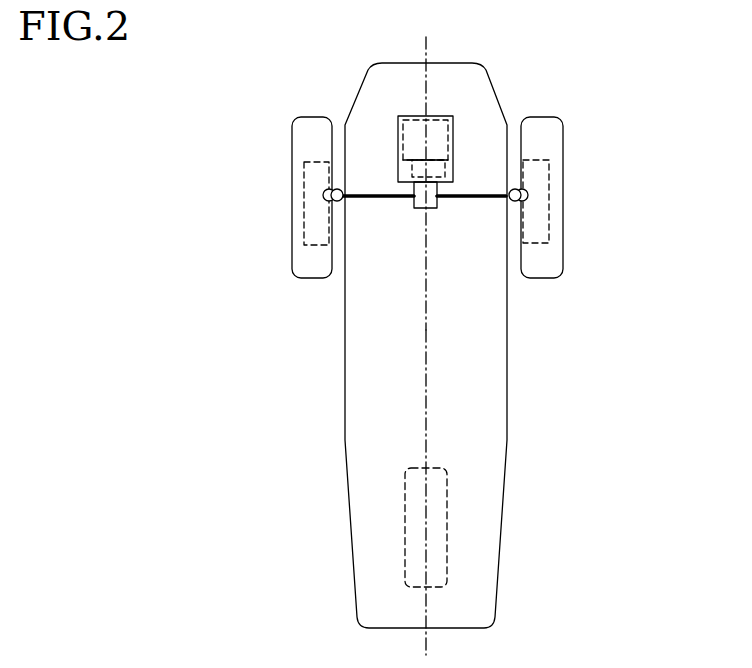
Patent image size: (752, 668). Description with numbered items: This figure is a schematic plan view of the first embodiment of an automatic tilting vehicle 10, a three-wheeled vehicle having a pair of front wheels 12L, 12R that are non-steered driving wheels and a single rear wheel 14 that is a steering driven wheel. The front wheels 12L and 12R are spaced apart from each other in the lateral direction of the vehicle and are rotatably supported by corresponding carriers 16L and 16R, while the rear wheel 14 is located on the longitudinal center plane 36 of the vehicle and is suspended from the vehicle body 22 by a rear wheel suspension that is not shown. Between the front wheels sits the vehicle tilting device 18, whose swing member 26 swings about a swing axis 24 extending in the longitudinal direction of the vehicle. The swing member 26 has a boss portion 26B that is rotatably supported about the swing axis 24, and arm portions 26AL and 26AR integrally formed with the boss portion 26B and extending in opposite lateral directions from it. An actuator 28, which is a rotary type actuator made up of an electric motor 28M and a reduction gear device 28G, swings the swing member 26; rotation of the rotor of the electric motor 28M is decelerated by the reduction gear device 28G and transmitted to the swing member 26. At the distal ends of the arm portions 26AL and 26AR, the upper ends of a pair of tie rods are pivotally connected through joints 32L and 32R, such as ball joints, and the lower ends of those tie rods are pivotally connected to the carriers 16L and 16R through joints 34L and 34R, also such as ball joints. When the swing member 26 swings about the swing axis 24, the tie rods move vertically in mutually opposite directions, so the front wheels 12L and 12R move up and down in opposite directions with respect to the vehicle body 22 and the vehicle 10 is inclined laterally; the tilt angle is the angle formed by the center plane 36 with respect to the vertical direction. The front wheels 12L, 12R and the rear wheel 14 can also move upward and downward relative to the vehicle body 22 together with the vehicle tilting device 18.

The automatic tilting vehicle 10 is at (334, 86).
The left front wheel 12L is at (292, 262).
The right front wheel 12R is at (563, 259).
The rear wheel 14 is at (433, 467).
The left carrier 16L is at (318, 245).
The right carrier 16R is at (536, 243).
The vehicle tilting device 18 is at (474, 99).
The vehicle body 22 is at (508, 412).
The swing axis 24 is at (427, 265).
The swing member 26 is at (350, 178).
The left arm portion 26AL is at (378, 202).
The right arm portion 26AR is at (456, 202).
The boss portion 26B is at (438, 191).
The actuator 28 is at (418, 117).
The electric motor 28M is at (452, 150).
The reduction gear device 28G is at (412, 172).
The left joint 32L is at (338, 202).
The right joint 32R is at (514, 201).
The left joint 34L is at (327, 193).
The right joint 34R is at (524, 193).
The center plane 36 is at (425, 372).